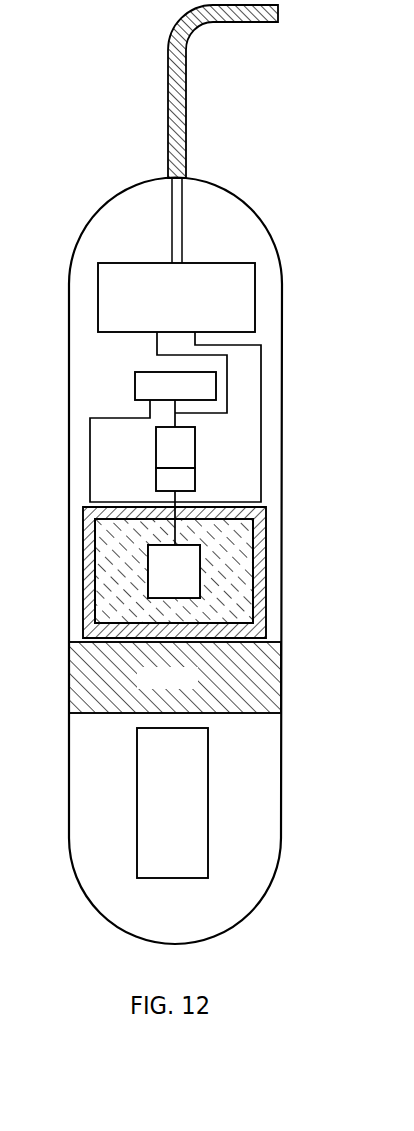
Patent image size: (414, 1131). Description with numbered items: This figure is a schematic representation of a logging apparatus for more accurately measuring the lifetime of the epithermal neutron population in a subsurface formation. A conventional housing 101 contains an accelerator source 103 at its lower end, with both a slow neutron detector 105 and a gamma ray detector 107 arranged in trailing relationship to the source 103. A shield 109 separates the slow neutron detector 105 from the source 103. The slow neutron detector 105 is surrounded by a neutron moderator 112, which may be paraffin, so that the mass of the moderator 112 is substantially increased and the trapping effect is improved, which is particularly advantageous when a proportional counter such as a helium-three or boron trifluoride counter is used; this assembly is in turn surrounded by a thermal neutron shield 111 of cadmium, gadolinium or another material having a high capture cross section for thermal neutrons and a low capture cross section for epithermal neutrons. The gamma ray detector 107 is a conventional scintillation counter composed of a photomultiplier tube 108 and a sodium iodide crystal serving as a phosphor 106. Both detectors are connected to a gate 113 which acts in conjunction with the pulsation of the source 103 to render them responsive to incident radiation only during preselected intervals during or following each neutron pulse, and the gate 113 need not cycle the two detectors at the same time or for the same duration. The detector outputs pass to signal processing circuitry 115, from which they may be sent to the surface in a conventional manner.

The housing 101 is at (69, 737).
The accelerator source 103 is at (208, 753).
The slow neutron detector 105 is at (200, 565).
The phosphor 106 is at (195, 487).
The gamma ray detector 107 is at (239, 456).
The photomultiplier tube 108 is at (195, 431).
The shield 109 is at (281, 675).
The thermal neutron shield 111 is at (266, 605).
The neutron moderator 112 is at (242, 587).
The gate 113 is at (150, 372).
The signal processing circuitry 115 is at (98, 308).